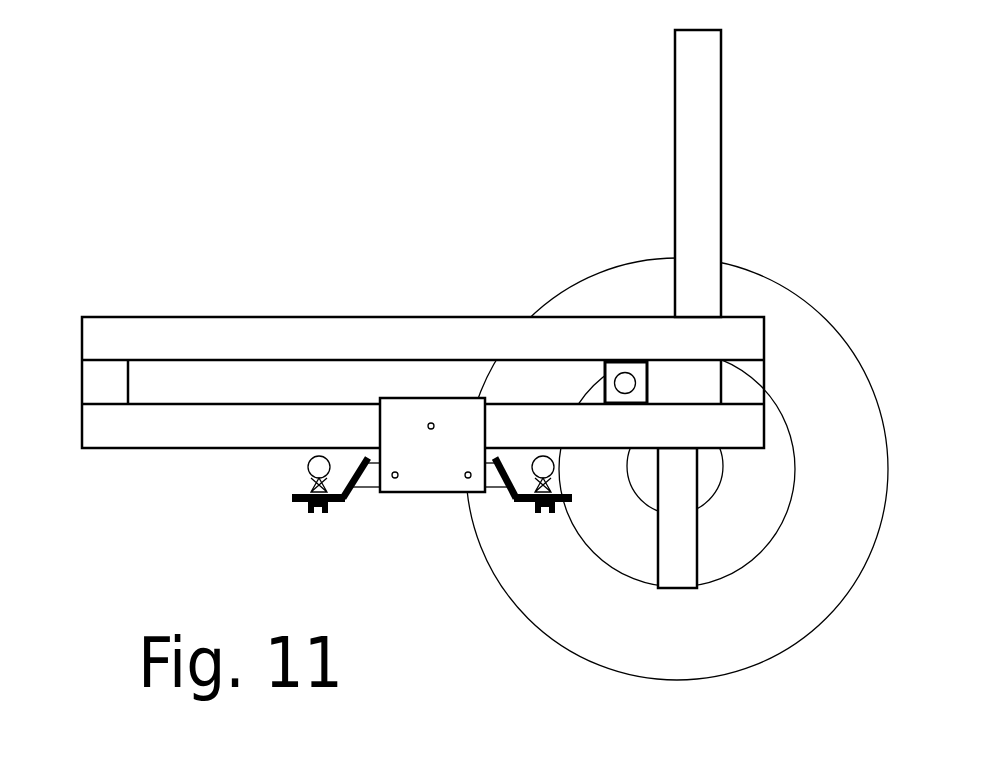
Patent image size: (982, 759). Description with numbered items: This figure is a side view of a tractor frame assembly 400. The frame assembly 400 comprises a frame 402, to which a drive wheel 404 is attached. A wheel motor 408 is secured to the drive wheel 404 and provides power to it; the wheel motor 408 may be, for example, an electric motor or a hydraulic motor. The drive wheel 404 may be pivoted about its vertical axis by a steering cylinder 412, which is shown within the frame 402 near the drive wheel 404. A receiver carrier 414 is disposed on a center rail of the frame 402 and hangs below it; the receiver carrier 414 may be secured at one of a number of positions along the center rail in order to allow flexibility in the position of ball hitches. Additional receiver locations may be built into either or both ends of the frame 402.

The tractor frame assembly 400 is at (170, 173).
The frame 402 is at (250, 315).
The drive wheel 404 is at (763, 278).
The wheel motor 408 is at (726, 456).
The steering cylinder 412 is at (605, 360).
The receiver carrier 414 is at (434, 493).